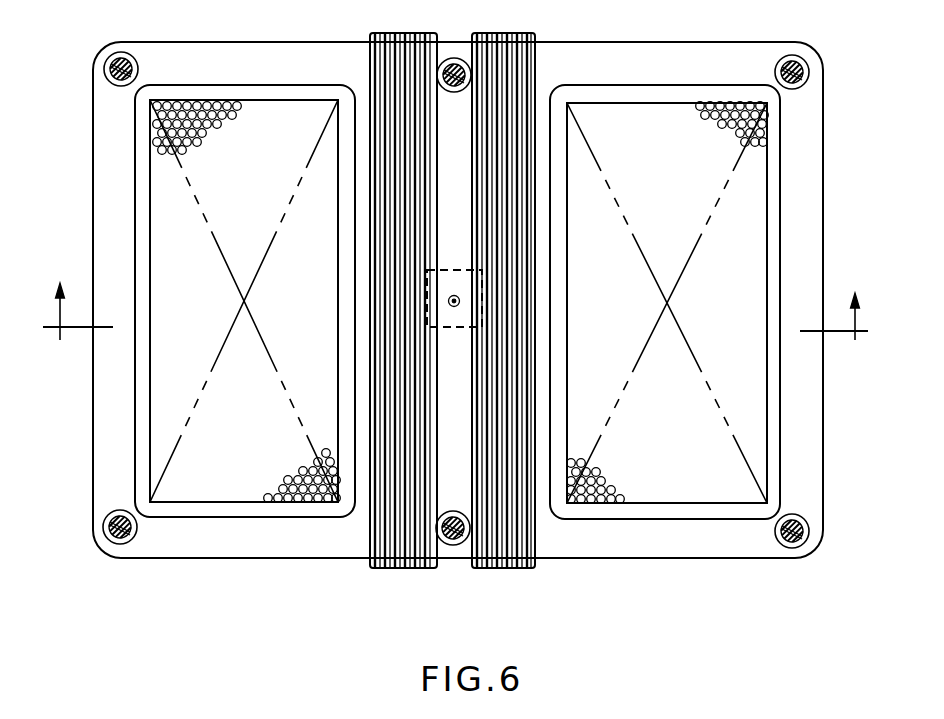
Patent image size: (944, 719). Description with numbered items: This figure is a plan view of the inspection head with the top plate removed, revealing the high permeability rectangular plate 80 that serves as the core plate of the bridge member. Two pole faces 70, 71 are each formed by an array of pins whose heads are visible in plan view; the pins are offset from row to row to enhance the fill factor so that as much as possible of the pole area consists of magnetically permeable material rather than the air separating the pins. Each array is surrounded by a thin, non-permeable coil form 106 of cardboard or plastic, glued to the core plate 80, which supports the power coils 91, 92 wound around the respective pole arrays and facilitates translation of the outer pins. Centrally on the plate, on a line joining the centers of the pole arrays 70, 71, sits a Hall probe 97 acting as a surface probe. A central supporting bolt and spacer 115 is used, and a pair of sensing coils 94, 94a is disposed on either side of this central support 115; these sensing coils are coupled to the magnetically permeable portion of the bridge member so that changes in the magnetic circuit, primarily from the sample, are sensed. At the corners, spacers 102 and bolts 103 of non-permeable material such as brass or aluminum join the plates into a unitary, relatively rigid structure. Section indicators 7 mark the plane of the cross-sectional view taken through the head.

The section line 7- 7 is at (455, 327).
The pole face 70 is at (265, 182).
The pole face 71 is at (686, 206).
The high permeability rectangular plate 80 is at (182, 545).
The power coil 91 is at (316, 512).
The power coil 92 is at (706, 522).
The sensing coil 94 is at (394, 570).
The sensing coil 94a is at (510, 570).
The Hall probe 97 is at (461, 328).
The spacer 102 is at (819, 540).
The bolt 103 is at (800, 527).
The coil form 106 is at (258, 505).
The central supporting bolt and spacer 115 is at (452, 546).